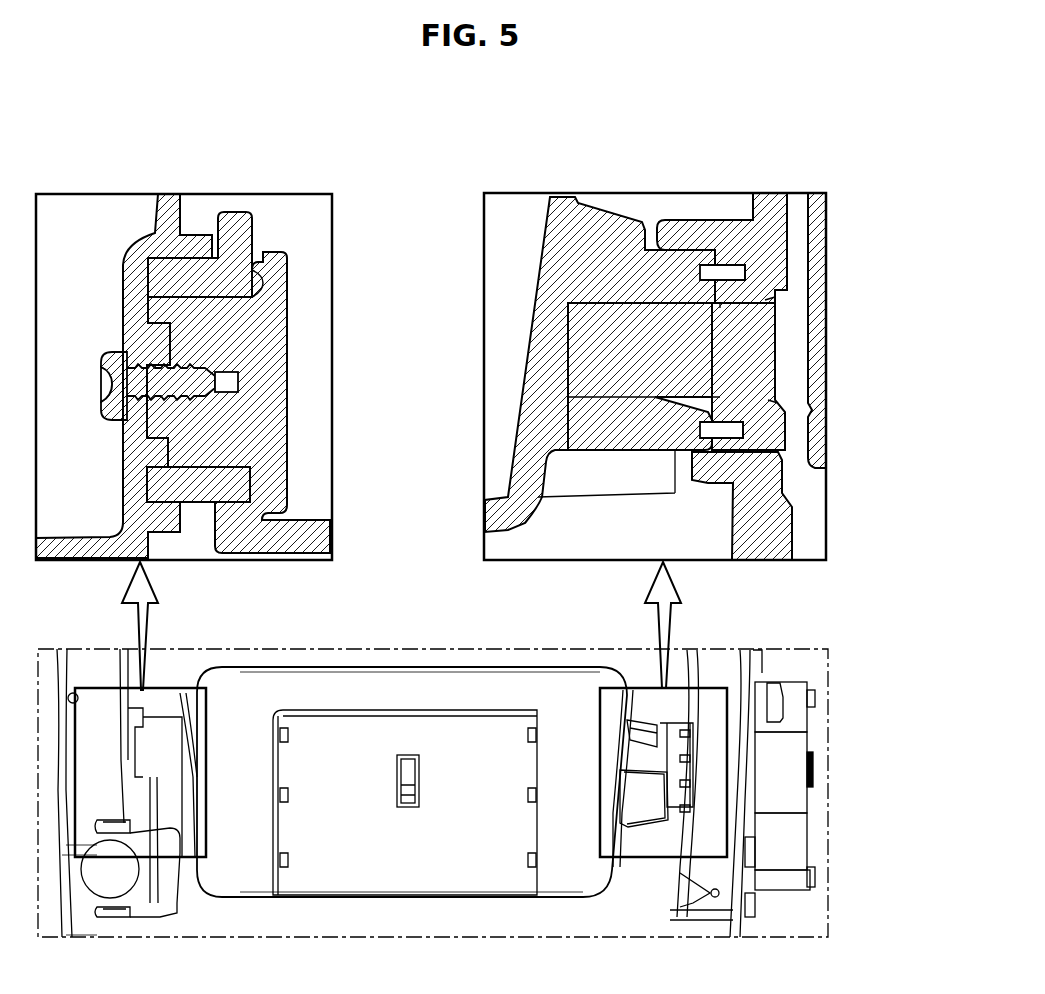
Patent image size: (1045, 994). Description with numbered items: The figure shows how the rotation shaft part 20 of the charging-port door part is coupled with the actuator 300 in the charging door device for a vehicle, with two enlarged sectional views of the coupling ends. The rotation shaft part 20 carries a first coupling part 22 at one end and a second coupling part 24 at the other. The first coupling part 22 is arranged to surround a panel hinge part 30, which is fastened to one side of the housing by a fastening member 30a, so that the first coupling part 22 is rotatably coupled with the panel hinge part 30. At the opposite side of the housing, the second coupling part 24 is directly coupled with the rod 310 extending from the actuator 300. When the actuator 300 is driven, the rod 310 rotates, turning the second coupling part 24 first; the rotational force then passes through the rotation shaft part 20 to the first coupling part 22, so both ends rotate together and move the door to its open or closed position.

The rotation shaft part 20 is at (238, 868).
The first coupling part 22 is at (237, 220).
The second coupling part 24 is at (590, 222).
The panel hinge part 30 is at (223, 402).
The fastening member 30a is at (135, 352).
The actuator 300 is at (820, 270).
The rod 310 is at (637, 320).